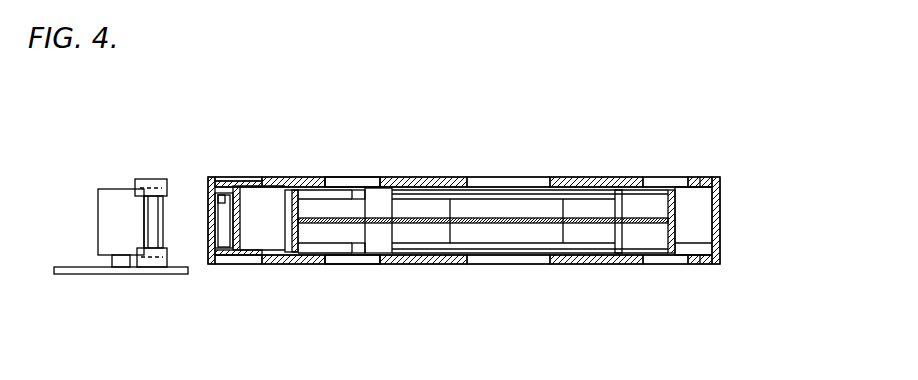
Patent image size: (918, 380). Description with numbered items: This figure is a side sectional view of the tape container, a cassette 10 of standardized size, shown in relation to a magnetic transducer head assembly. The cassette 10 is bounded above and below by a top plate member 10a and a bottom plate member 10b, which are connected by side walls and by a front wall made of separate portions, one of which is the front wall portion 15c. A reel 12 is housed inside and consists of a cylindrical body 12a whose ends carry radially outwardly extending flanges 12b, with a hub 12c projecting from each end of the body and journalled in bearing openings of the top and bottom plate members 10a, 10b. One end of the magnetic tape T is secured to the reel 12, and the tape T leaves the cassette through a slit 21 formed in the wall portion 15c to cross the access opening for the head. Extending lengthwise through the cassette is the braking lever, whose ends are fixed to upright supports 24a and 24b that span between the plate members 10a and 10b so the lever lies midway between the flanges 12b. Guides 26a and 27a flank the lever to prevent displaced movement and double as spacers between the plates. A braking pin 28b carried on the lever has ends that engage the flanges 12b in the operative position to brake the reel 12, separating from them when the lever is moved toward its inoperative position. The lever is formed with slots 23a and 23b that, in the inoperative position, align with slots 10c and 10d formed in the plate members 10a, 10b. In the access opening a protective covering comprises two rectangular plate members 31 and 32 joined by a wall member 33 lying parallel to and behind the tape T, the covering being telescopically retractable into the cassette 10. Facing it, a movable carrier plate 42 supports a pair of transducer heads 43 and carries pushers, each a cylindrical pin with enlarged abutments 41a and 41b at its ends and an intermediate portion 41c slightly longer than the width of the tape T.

The cassette 10 is at (721, 227).
The top plate member 10a is at (623, 178).
The bottom plate member 10b is at (627, 263).
The slot 10c is at (662, 182).
The slot 10d is at (348, 178).
The reel 12 is at (527, 250).
The cylindrical body 12a is at (533, 193).
The flanges 12b is at (427, 190).
The hub 12c is at (480, 190).
The front wall portion 15c is at (212, 228).
The slit 21 is at (227, 187).
The slot 23a is at (716, 246).
The slot 23b is at (342, 226).
The upright support 24a is at (299, 230).
The upright support 24b is at (673, 238).
The guide 26a is at (695, 208).
The guide 27a is at (380, 200).
The braking pin 28b is at (612, 232).
The plate member 31 is at (253, 186).
The plate member 32 is at (238, 250).
The wall member 33 is at (245, 232).
The abutment 41a is at (147, 180).
The abutment 41b is at (147, 263).
The intermediate portion 41c is at (152, 220).
The movable carrier plate 42 is at (90, 274).
The transducer heads 43 is at (107, 205).
The magnetic tape T is at (218, 203).